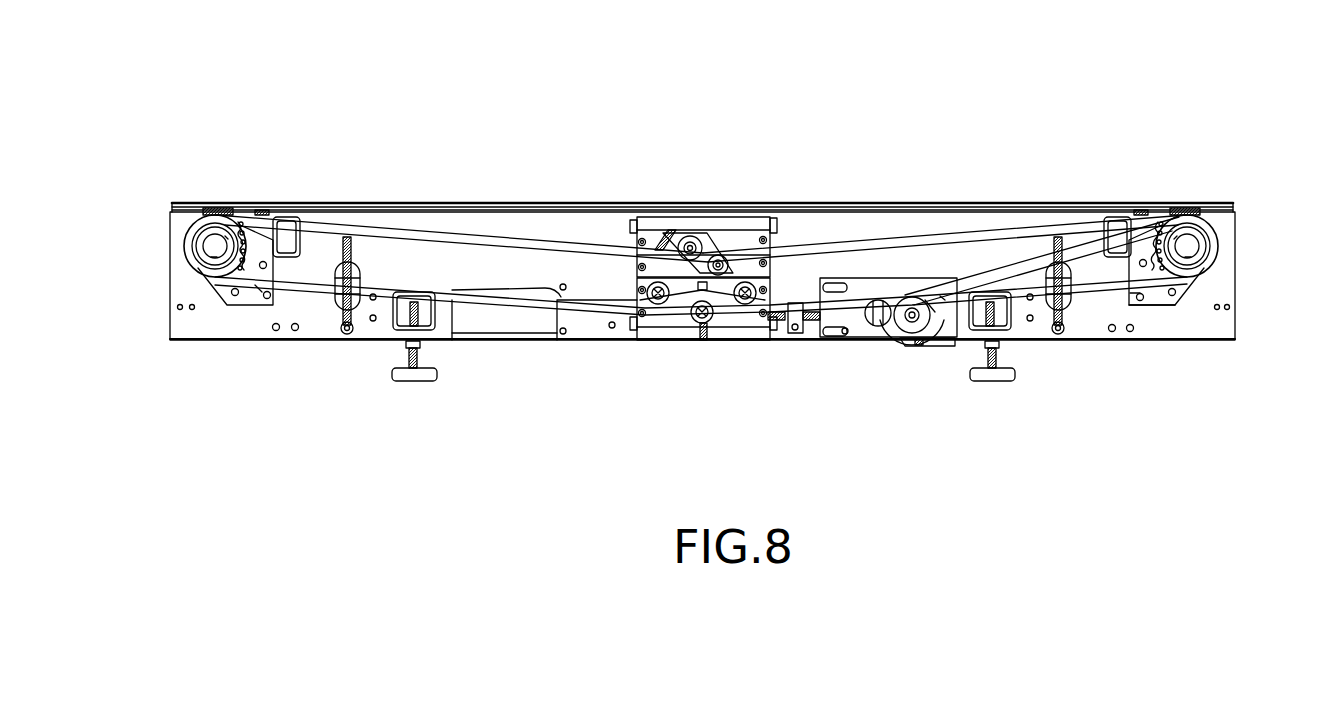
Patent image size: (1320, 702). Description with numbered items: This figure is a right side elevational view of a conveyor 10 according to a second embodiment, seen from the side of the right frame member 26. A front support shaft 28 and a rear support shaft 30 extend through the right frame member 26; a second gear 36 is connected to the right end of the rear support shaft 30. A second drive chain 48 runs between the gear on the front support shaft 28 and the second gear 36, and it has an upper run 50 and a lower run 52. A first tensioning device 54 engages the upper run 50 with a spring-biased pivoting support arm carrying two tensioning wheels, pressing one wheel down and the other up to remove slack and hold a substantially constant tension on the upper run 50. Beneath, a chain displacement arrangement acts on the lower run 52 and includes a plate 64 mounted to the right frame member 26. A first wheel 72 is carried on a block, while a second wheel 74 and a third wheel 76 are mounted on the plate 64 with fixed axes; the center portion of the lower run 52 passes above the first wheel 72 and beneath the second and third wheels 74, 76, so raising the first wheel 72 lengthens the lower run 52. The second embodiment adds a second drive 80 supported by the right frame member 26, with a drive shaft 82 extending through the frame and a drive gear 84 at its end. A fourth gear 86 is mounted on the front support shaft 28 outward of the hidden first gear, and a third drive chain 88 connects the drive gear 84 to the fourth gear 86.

The conveyor 10 is at (715, 140).
The right frame member 26 is at (895, 226).
The front support shaft 28 is at (1190, 247).
The rear support shaft 30 is at (218, 246).
The second gear 36 is at (257, 246).
The second drive chain 48 is at (542, 218).
The upper run 50 is at (430, 232).
The lower run 52 is at (487, 300).
The first tensioning device 54 is at (720, 240).
The plate 64 is at (684, 320).
The first wheel 72 is at (708, 322).
The second wheel 74 is at (660, 306).
The third wheel 76 is at (748, 306).
The second drive 80 is at (911, 346).
The drive shaft 82 is at (896, 340).
The drive gear 84 is at (933, 328).
The fourth gear 86 is at (1157, 266).
The third drive chain 88 is at (1035, 262).